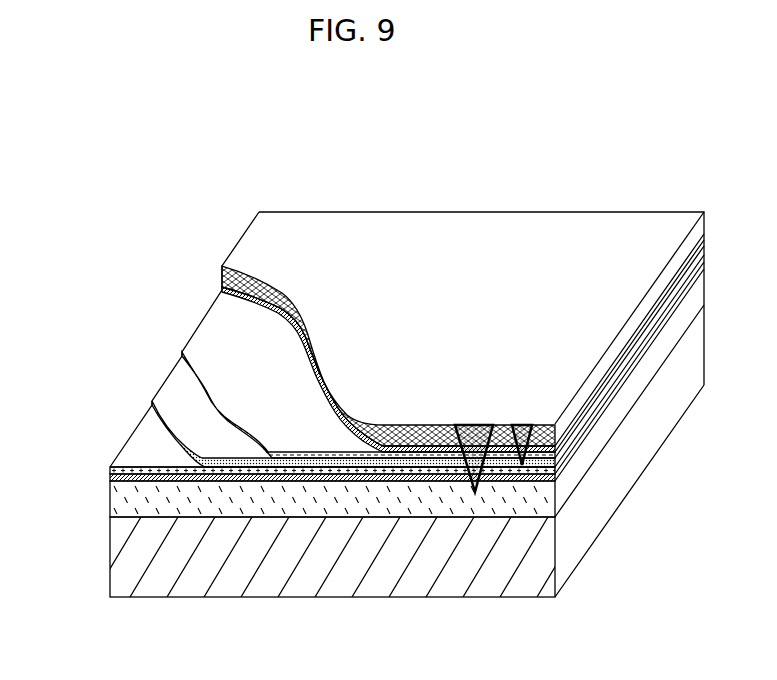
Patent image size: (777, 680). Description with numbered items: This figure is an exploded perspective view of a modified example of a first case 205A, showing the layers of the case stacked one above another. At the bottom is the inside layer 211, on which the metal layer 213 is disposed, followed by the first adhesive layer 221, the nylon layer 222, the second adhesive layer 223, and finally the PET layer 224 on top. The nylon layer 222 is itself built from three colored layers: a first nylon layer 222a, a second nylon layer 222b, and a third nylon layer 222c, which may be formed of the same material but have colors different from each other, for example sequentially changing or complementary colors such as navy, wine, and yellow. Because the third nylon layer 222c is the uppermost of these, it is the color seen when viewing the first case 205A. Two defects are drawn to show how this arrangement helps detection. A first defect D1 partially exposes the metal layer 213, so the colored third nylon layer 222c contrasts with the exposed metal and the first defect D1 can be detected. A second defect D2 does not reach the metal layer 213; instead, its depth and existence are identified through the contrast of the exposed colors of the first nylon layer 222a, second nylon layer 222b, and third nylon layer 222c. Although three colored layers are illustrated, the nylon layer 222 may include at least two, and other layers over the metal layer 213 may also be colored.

The first case 205A is at (546, 206).
The inside layer 211 is at (110, 573).
The metal layer 213 is at (110, 500).
The first adhesive layer 221 is at (110, 476).
The nylon layer 222 is at (102, 318).
The first nylon layer 222a is at (142, 448).
The second nylon layer 222b is at (197, 418).
The third nylon layer 222c is at (237, 383).
The second adhesive layer 223 is at (232, 266).
The PET layer 224 is at (285, 296).
The first defect D1 is at (466, 424).
The second defect D2 is at (521, 424).